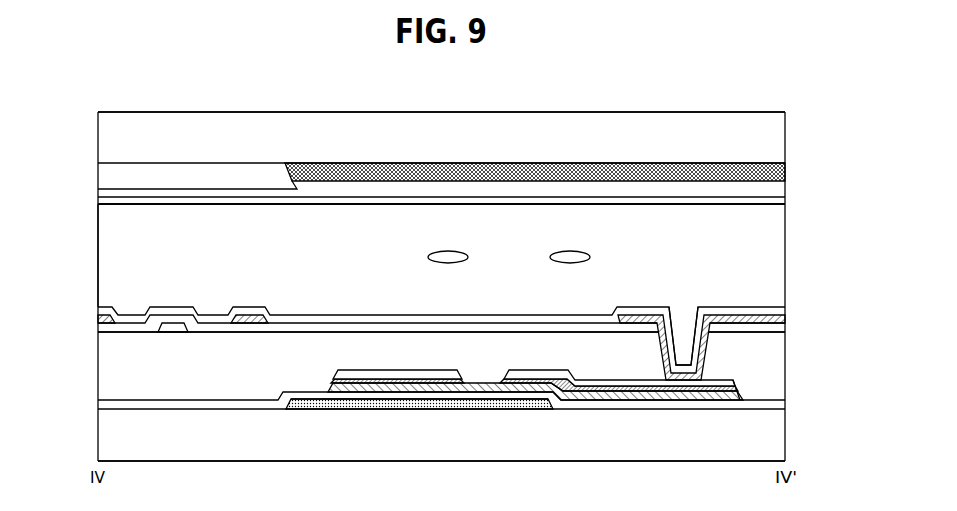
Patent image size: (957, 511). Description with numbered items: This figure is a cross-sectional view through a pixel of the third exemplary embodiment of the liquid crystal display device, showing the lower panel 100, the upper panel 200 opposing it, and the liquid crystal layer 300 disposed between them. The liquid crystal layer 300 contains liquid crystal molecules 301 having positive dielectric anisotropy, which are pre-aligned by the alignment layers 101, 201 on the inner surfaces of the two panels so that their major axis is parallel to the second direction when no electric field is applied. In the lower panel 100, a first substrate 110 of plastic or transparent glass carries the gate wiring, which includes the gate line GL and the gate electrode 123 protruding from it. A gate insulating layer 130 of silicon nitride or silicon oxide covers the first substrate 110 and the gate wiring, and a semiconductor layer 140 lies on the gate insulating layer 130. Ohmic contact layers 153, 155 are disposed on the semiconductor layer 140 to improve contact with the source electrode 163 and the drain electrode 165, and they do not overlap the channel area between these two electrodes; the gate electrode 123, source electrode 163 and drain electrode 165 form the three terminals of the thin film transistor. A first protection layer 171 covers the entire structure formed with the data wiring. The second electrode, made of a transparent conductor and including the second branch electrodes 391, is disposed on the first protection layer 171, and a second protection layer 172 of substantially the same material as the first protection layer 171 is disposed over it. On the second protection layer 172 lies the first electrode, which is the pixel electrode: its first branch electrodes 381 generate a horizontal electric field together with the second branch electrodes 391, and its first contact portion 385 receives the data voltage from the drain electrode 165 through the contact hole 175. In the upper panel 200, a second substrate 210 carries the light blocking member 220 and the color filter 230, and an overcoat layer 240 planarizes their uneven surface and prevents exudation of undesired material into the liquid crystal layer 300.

The upper panel 200 is at (797, 112).
The second substrate 210 is at (569, 130).
The light blocking member 220 is at (700, 170).
The color filter 230 is at (189, 177).
The overcoat layer 240 is at (350, 193).
The alignment layer 201 is at (452, 203).
The liquid crystal layer 300 is at (797, 204).
The liquid crystal molecules 301 is at (563, 255).
The lower panel 100 is at (797, 292).
The first substrate 110 is at (350, 442).
The gate insulating layer 130 is at (750, 403).
The gate line GL is at (293, 410).
The gate electrode 123 is at (490, 407).
The semiconductor layer 140 is at (530, 388).
The ohmic contact layer 153 is at (441, 382).
The ohmic contact layer 155 is at (545, 380).
The source electrode 163 is at (391, 373).
The drain electrode 165 is at (700, 382).
The first protection layer 171 is at (107, 369).
The second protection layer 172 is at (100, 329).
The contact hole 175 is at (683, 325).
The first branch electrodes 381 is at (100, 320).
The first contact portion 385 is at (636, 320).
The second branch electrodes 391 is at (172, 328).
The alignment layer 101 is at (98, 311).